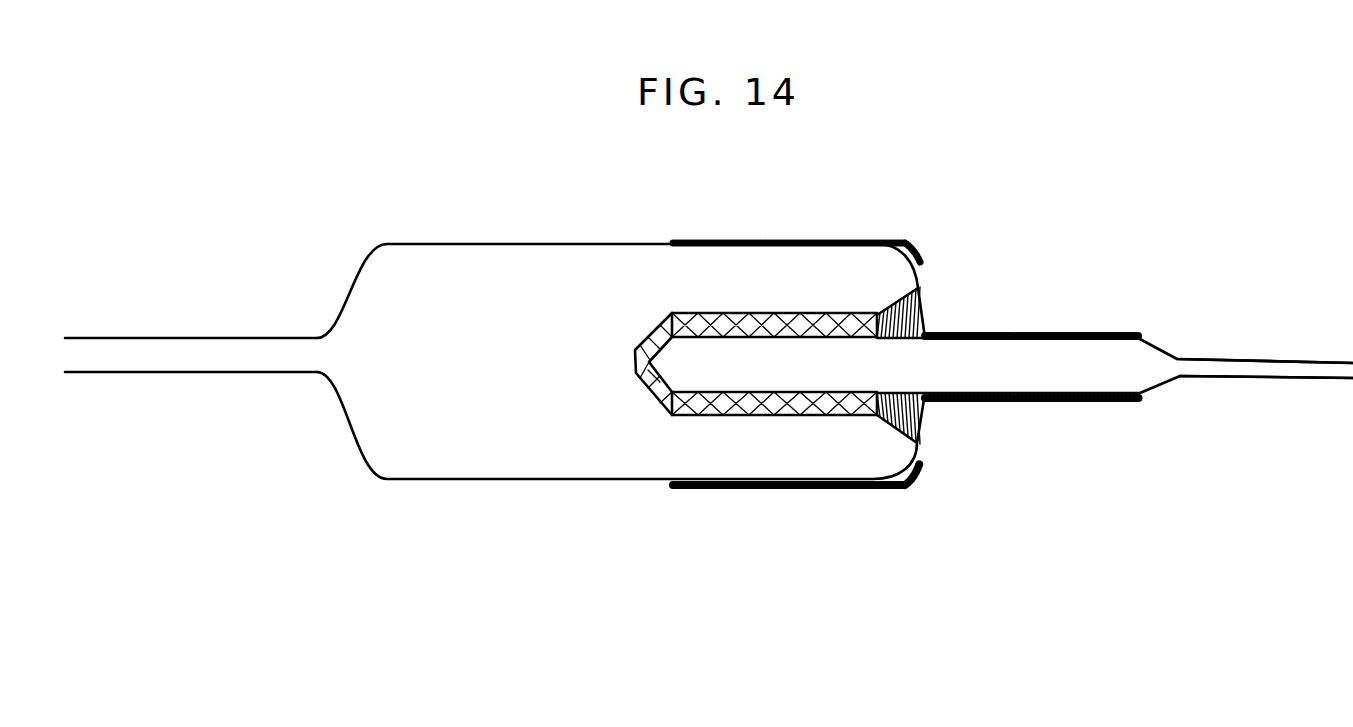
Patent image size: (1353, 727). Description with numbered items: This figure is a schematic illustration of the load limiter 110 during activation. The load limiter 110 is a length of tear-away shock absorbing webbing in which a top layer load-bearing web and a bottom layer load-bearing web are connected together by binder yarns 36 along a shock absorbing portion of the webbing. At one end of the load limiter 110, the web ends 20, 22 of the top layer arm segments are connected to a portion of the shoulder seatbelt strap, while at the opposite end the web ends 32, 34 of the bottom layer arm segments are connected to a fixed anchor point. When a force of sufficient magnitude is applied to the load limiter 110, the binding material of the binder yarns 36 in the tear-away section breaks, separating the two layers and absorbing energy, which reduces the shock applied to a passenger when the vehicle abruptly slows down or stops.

The load limiter 110 is at (465, 140).
The web end 32 is at (90, 338).
The web end 34 is at (112, 372).
The binder yarns 36 is at (817, 240).
The web end 20 is at (1293, 360).
The web end 22 is at (1233, 382).